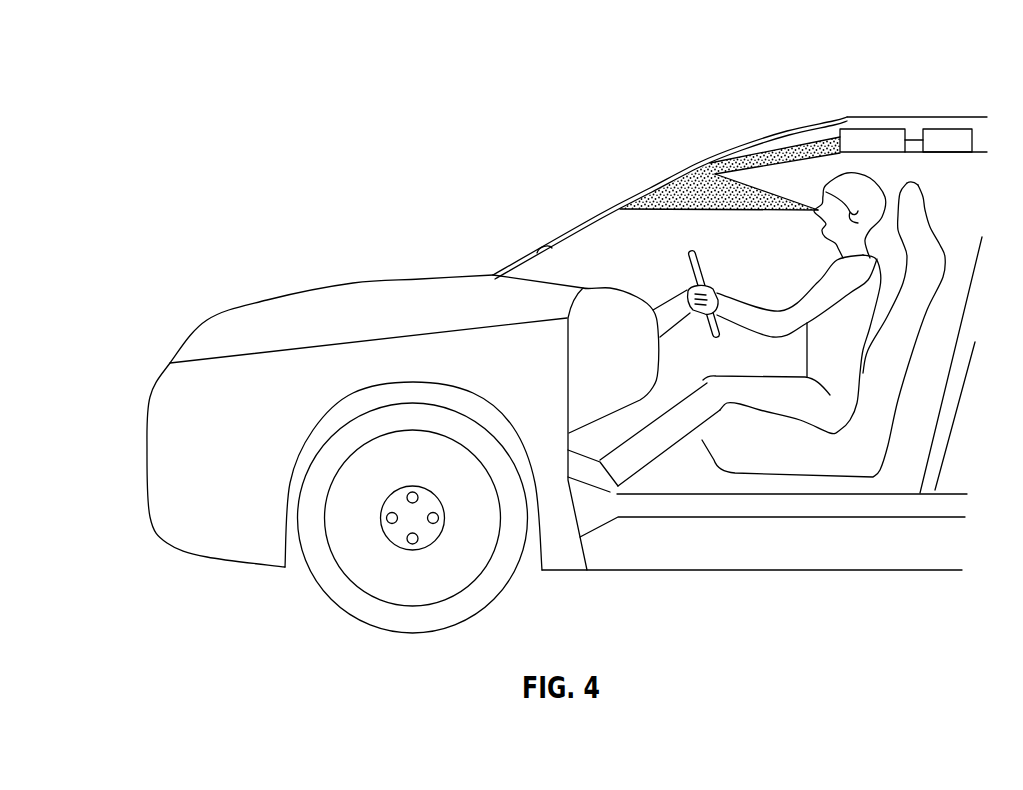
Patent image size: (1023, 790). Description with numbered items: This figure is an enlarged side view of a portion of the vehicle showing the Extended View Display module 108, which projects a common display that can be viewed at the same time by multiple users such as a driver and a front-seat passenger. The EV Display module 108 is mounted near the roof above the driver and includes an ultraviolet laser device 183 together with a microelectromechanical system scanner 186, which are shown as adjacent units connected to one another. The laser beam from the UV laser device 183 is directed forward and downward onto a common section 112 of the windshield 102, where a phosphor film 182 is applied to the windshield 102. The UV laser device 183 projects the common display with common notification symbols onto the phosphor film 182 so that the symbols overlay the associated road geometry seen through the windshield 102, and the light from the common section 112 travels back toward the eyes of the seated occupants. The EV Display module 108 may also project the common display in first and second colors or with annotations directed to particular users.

The windshield 102 is at (587, 217).
The Extended View Display module 108 is at (824, 112).
The common section 112 is at (627, 198).
The phosphor film 182 is at (530, 250).
The ultraviolet laser device 183 is at (887, 128).
The microelectromechanical system scanner 186 is at (957, 128).